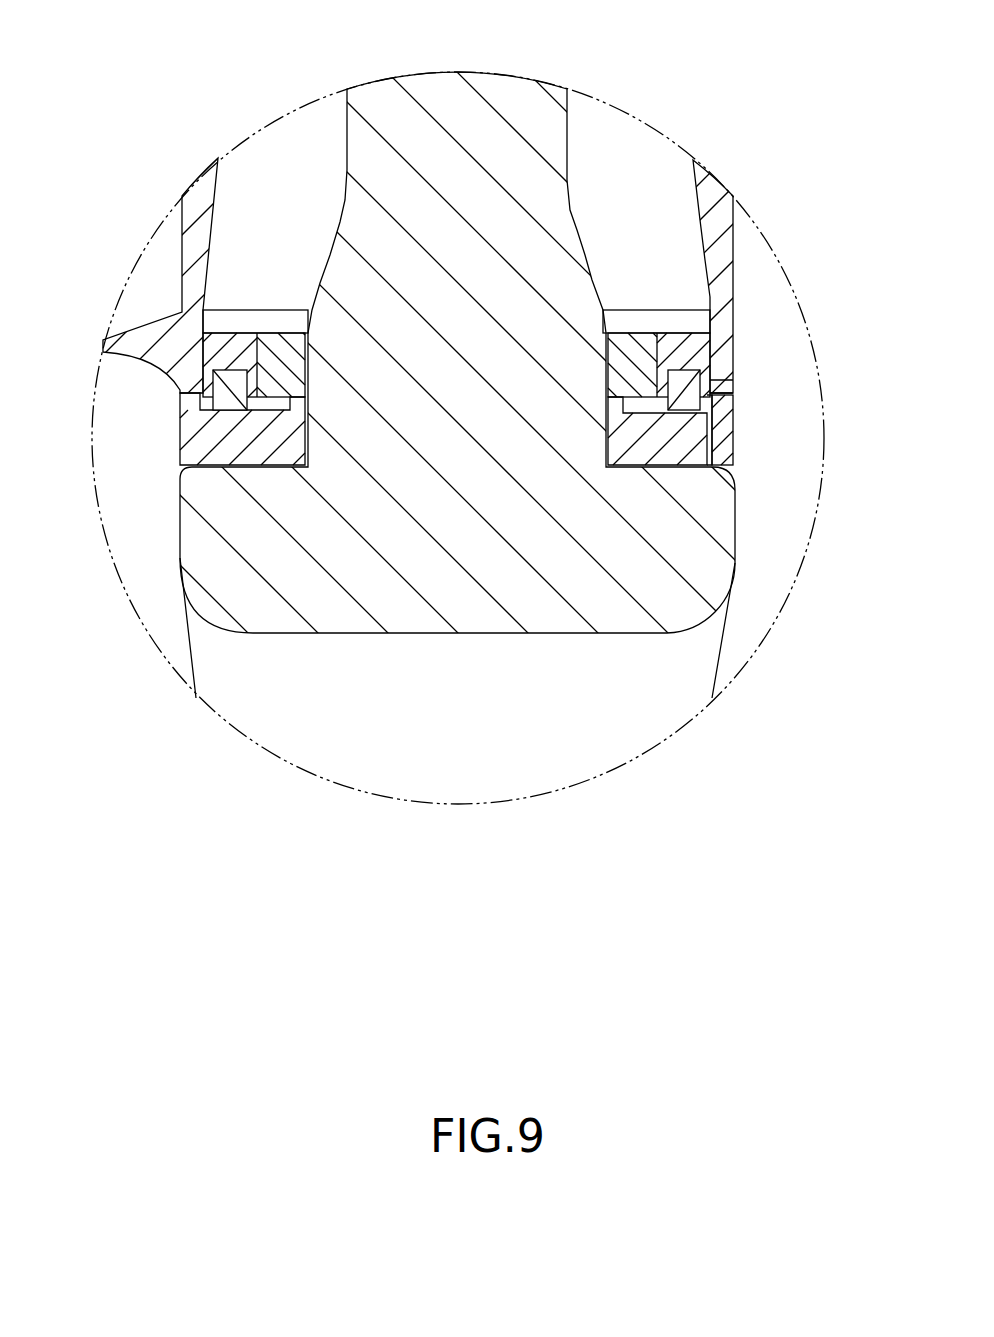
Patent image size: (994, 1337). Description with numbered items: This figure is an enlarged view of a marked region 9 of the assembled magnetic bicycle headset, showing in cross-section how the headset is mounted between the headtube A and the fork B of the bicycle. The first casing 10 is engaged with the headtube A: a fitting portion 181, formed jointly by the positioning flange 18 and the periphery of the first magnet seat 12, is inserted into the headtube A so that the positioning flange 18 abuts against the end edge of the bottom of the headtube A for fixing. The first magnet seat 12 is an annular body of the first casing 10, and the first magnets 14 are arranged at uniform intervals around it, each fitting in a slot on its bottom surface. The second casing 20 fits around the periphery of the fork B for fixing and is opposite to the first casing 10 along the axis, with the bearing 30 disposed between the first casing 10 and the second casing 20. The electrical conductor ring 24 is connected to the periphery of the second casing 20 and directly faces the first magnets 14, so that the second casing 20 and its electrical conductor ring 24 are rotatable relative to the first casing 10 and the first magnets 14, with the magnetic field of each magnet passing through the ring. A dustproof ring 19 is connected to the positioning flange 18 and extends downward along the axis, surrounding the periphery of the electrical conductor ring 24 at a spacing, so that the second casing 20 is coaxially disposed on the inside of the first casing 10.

The enlarged detail region 9 is at (265, 118).
The first casing 10 is at (217, 330).
The bearing 30 is at (277, 337).
The first magnet seat 12 is at (682, 340).
The headtube A is at (723, 233).
The fitting portion 181 is at (717, 382).
The positioning flange 18 is at (715, 400).
The dustproof ring 19 is at (735, 445).
The first magnets 14 is at (727, 463).
The electrical conductor ring 24 is at (682, 467).
The second casing 20 is at (248, 468).
The fork B is at (380, 583).